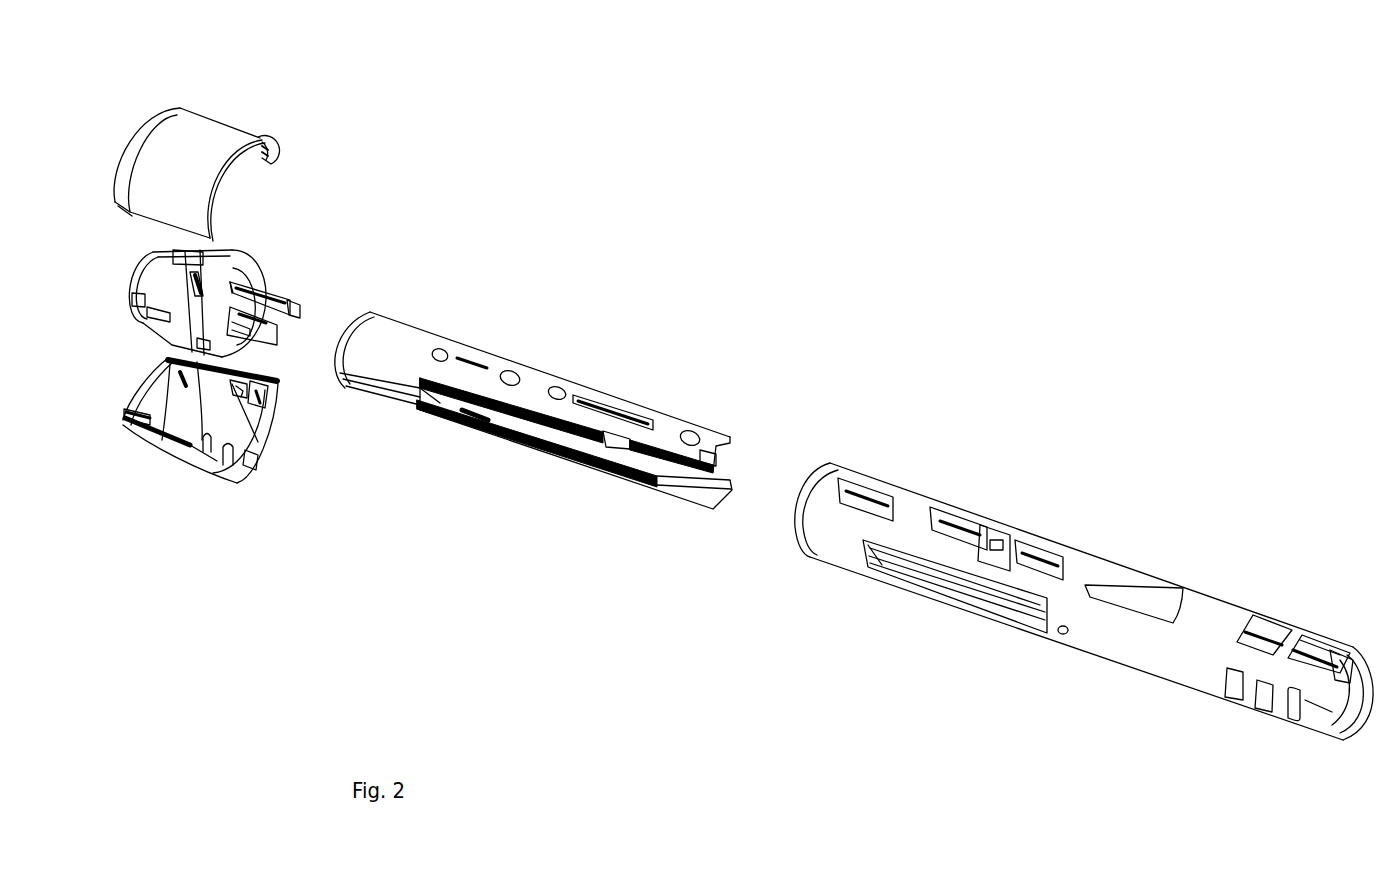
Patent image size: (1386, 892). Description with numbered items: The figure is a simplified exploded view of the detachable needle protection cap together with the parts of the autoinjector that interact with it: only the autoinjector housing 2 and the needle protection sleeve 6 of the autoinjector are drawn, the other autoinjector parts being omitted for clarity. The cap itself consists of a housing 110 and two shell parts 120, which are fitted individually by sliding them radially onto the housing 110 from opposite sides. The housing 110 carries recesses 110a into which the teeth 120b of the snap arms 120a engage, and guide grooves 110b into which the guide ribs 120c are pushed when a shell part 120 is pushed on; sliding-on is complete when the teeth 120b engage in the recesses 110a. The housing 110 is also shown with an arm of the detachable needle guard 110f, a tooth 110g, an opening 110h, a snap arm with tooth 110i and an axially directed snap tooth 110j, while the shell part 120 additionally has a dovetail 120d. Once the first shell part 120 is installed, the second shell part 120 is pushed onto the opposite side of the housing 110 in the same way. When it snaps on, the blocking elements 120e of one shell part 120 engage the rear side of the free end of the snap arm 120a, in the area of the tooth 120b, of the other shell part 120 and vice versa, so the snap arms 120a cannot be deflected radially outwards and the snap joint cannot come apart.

The autoinjector housing 2 is at (1028, 525).
The needle protection sleeve 6 is at (540, 349).
The housing 110 is at (262, 247).
The recess 110a is at (132, 296).
The guide groove 110b is at (140, 312).
The arm of detachable needle guard 110f is at (280, 292).
The tooth 110g is at (296, 312).
The opening 110h is at (264, 280).
The snap arm with tooth 110i is at (200, 250).
The axially directed snap tooth 110j is at (203, 277).
The shell part 120 is at (120, 134).
The snap arm 120a is at (133, 418).
The tooth 120b is at (280, 384).
The guide rib 120c is at (200, 440).
The dovetail 120d is at (250, 460).
The blocking element 120e is at (262, 146).